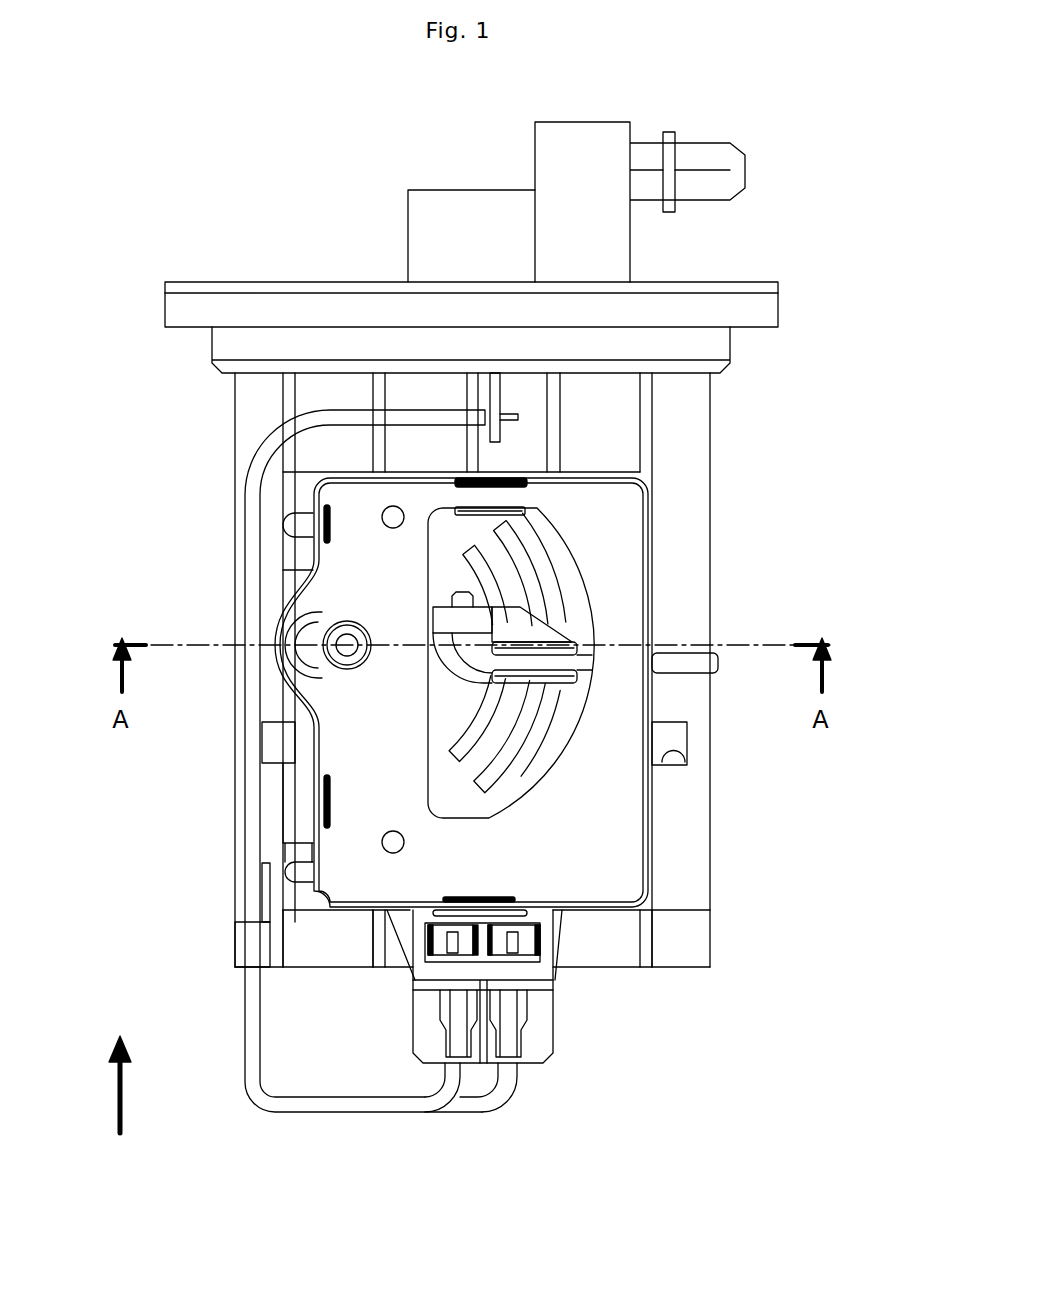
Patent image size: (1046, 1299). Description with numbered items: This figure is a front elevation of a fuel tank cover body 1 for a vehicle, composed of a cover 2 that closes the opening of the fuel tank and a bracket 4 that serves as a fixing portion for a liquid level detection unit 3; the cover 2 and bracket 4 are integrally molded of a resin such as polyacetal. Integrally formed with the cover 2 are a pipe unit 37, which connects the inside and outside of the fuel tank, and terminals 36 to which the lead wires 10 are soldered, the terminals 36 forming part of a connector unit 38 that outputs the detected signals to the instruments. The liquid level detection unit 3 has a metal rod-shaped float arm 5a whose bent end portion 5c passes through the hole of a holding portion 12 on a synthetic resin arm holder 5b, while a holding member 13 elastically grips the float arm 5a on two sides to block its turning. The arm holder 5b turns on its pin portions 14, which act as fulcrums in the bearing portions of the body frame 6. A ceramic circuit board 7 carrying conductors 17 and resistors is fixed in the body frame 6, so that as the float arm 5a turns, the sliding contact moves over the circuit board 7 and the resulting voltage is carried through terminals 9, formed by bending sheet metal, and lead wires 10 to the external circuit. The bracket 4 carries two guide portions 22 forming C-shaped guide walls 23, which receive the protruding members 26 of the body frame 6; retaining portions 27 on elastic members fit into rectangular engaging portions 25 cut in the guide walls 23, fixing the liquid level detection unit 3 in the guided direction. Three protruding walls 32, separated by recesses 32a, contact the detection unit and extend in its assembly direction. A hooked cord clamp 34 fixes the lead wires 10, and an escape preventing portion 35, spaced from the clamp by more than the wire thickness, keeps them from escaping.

The fuel tank cover body 1 is at (722, 262).
The cover 2 is at (305, 345).
The liquid level detection unit 3 is at (266, 603).
The bracket 4 is at (688, 432).
The float arm 5a is at (690, 662).
The arm holder 5b is at (465, 673).
The bent end portion 5c is at (462, 590).
The body frame 6 is at (330, 497).
The circuit board 7 is at (518, 775).
The terminals 9 is at (425, 945).
The lead wires 10 is at (422, 1107).
The holding portion 12 is at (440, 612).
The holding member 13 is at (560, 680).
The pin portions 14 is at (330, 646).
The conductors 17 is at (482, 783).
The guide portions 22 is at (224, 430).
The guide walls 23 is at (265, 793).
The engaging portions 25 is at (270, 775).
The protruding members 26 is at (300, 548).
The retaining portions 27 is at (275, 740).
The protruding walls 32 is at (376, 930).
The recesses 32a is at (320, 960).
The cord clamp 34 is at (250, 957).
The escape preventing portion 35 is at (265, 885).
The terminals 36 is at (500, 398).
The pipe unit 37 is at (566, 162).
The connector unit 38 is at (445, 213).